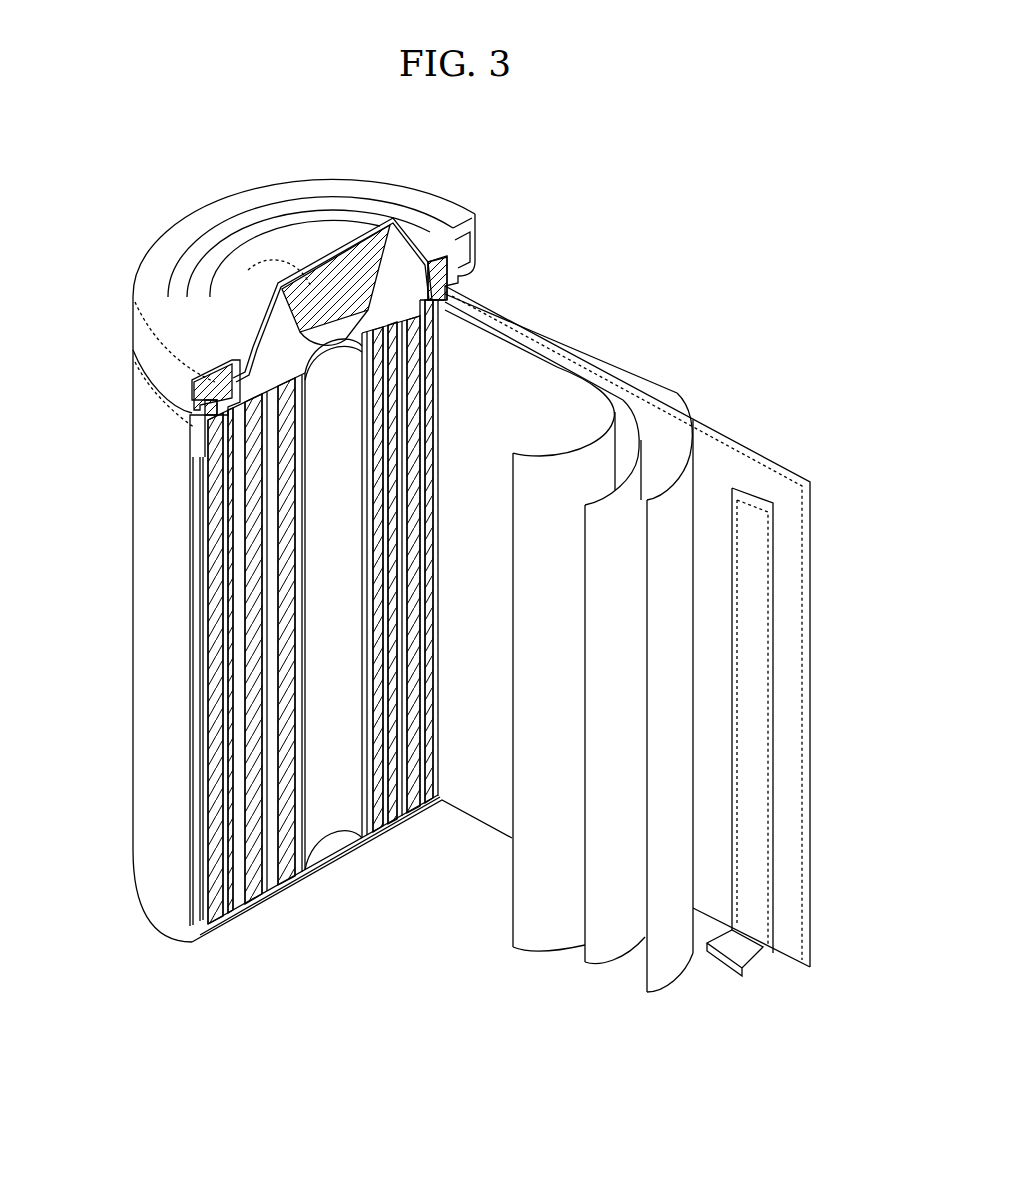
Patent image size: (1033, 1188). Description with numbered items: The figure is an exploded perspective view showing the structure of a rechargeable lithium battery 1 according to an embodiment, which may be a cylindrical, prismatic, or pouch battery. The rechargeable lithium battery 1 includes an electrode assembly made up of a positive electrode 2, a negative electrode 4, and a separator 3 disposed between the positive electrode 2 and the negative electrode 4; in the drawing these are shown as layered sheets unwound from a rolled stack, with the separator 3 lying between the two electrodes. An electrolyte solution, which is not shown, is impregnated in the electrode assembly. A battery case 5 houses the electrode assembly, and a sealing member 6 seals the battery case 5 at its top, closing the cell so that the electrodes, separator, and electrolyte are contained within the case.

The rechargeable lithium battery 1 is at (668, 216).
The positive electrode 2 is at (758, 453).
The separator 3 is at (556, 367).
The negative electrode 4 is at (626, 428).
The battery case 5 is at (150, 692).
The sealing member 6 is at (308, 222).